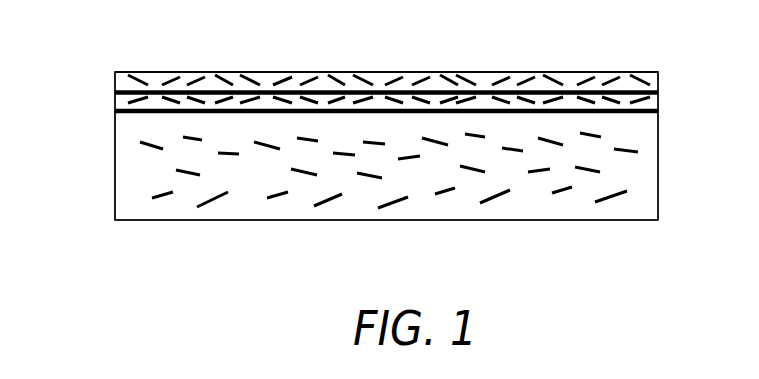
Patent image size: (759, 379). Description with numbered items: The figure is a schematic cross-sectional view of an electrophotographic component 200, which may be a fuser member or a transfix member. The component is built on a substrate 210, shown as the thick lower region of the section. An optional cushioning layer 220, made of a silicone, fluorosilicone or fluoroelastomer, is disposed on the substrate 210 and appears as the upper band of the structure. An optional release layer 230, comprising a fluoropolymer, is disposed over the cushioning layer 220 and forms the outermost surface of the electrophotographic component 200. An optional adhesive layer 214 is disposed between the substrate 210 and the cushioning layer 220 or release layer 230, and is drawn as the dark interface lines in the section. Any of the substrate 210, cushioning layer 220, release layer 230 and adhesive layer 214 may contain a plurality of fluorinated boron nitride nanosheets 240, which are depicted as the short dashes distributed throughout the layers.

The electrophotographic component 200 is at (230, 47).
The substrate 210 is at (660, 172).
The adhesive layer 214 is at (115, 93).
The cushioning layer 220 is at (660, 102).
The release layer 230 is at (393, 72).
The fluorinated boron nitride nanosheets 240 is at (582, 78).